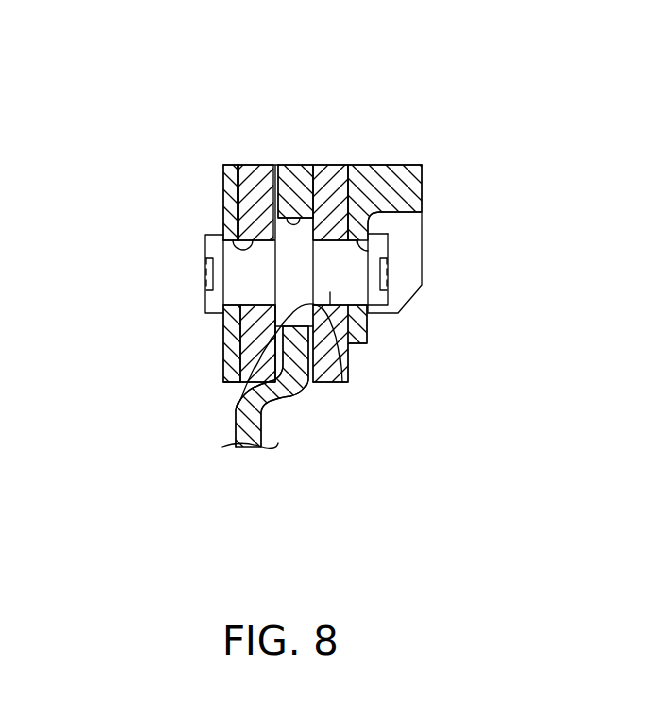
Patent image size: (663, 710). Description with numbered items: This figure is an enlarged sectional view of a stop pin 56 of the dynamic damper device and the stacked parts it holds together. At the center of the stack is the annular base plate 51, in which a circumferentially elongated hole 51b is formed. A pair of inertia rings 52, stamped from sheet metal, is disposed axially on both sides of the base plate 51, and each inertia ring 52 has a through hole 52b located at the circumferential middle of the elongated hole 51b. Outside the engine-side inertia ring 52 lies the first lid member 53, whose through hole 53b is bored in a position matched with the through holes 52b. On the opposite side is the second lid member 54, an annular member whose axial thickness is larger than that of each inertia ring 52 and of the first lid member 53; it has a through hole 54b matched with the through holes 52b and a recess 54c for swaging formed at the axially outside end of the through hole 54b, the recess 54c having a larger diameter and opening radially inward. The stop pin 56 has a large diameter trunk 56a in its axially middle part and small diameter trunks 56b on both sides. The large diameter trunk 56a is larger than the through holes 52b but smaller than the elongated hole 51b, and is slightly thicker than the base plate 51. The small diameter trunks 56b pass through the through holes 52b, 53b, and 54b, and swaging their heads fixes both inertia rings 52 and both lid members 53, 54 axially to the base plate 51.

The base plate 51 is at (290, 390).
The elongated hole 51b is at (290, 172).
The inertia ring 52 is at (257, 172).
The through hole 52b is at (224, 210).
The first lid member 53 is at (222, 180).
The through hole 53b is at (228, 296).
The second lid member 54 is at (405, 166).
The through hole 54b is at (385, 252).
The recess 54c is at (410, 265).
The stop pin 56 is at (390, 329).
The large diameter trunk 56a is at (238, 382).
The small diameter trunk 56b is at (237, 272).